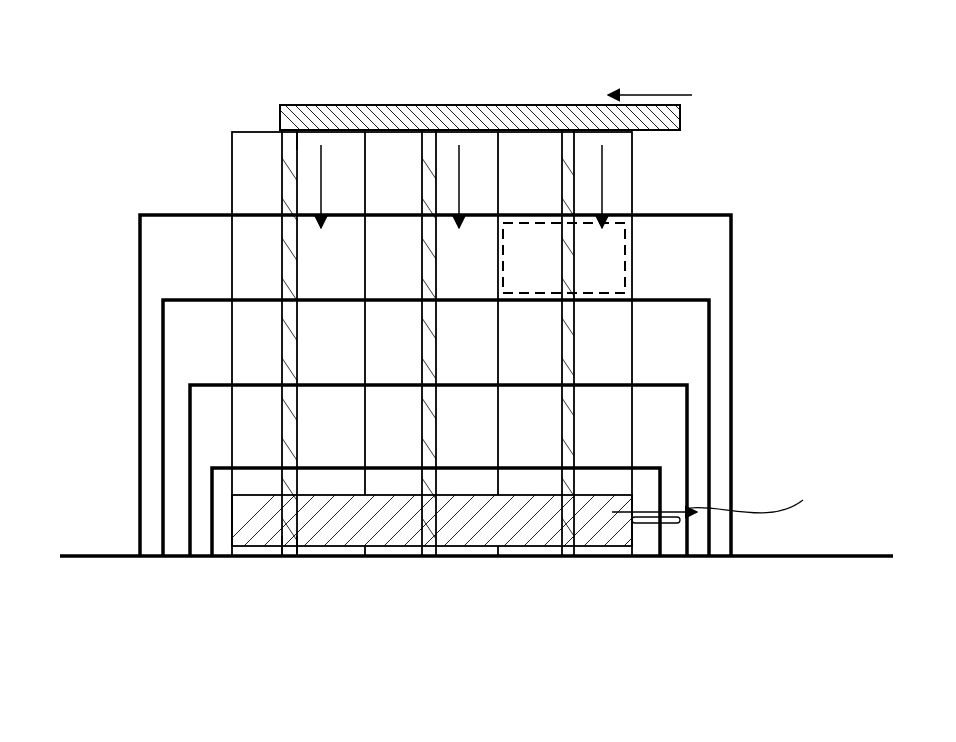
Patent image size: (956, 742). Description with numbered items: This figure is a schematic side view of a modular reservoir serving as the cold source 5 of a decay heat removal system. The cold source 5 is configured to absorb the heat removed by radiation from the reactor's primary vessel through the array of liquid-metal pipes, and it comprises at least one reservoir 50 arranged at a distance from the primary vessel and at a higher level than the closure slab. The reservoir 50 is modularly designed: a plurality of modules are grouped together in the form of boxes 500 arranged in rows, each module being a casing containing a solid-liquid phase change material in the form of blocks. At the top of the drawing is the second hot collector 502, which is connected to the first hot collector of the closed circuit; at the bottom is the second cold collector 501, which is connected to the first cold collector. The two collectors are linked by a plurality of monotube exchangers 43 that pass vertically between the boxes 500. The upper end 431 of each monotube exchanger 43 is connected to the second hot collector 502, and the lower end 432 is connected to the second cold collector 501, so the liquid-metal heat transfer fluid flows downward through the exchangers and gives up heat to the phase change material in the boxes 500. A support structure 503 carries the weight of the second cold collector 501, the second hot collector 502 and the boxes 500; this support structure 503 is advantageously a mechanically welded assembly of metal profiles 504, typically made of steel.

The cold source 5 is at (98, 286).
The reservoir 50 is at (232, 132).
The monotube exchanger 43 is at (428, 130).
The end of monotube exchanger 431 is at (282, 133).
The end of monotube exchanger 432 is at (290, 522).
The box 500 is at (612, 262).
The second cold collector 501 is at (547, 525).
The second hot collector 502 is at (486, 105).
The support structure 503 is at (733, 403).
The metal profile 504 is at (190, 385).